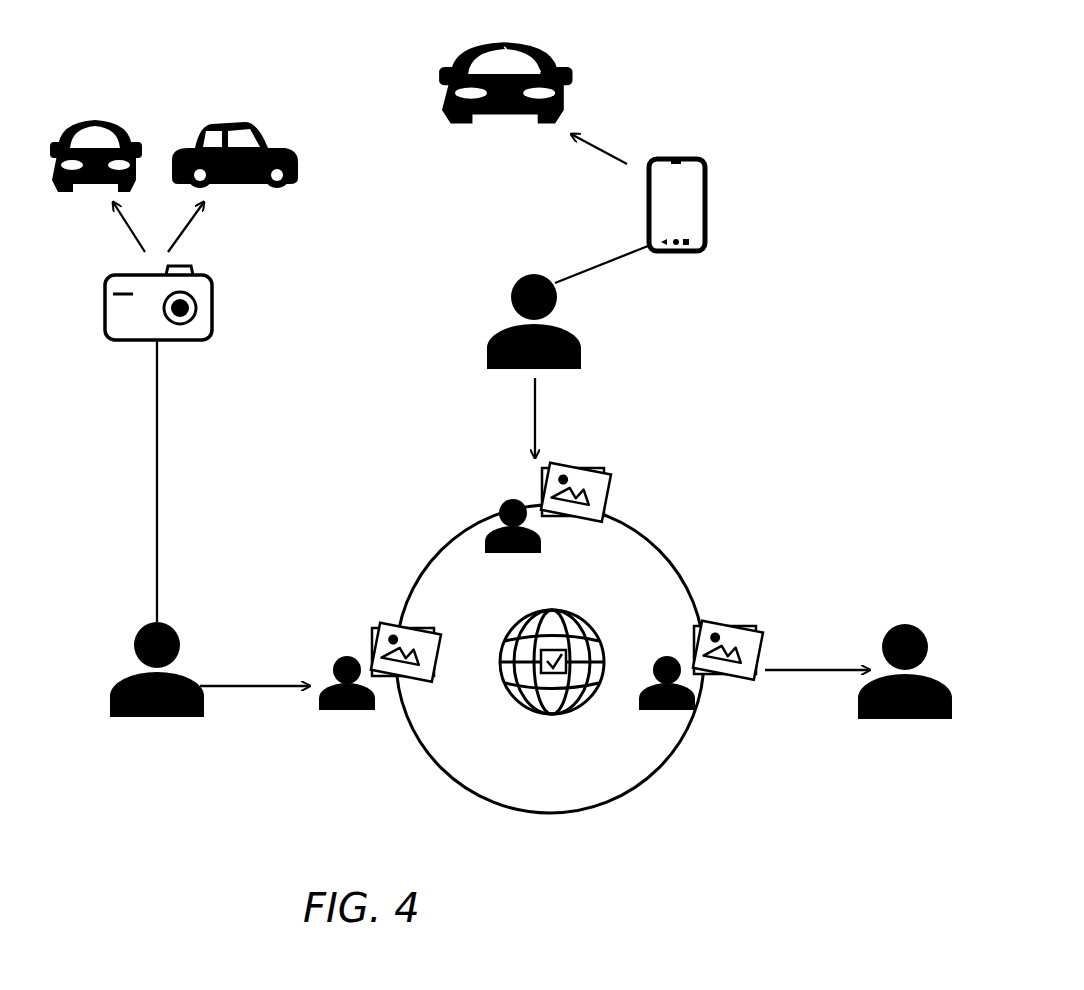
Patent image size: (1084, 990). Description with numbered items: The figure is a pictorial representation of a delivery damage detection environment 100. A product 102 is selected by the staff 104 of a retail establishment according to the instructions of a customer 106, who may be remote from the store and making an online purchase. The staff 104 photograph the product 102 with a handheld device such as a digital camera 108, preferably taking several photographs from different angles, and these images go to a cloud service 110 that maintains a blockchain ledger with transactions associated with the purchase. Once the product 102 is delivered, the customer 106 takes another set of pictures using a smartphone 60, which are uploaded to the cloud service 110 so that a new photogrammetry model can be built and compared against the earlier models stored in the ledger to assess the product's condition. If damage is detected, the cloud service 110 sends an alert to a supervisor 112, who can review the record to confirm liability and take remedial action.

The delivery damage detection environment 100 is at (780, 85).
The product 102 is at (230, 118).
The smartphone 60 is at (708, 240).
The staff 104 is at (140, 718).
The customer 106 is at (582, 350).
The digital camera 108 is at (105, 325).
The cloud service 110 is at (558, 815).
The supervisor 112 is at (870, 718).